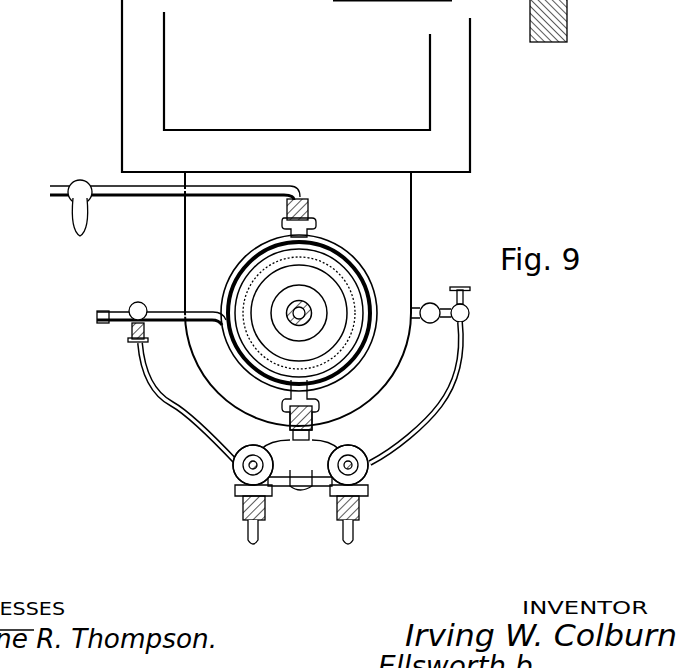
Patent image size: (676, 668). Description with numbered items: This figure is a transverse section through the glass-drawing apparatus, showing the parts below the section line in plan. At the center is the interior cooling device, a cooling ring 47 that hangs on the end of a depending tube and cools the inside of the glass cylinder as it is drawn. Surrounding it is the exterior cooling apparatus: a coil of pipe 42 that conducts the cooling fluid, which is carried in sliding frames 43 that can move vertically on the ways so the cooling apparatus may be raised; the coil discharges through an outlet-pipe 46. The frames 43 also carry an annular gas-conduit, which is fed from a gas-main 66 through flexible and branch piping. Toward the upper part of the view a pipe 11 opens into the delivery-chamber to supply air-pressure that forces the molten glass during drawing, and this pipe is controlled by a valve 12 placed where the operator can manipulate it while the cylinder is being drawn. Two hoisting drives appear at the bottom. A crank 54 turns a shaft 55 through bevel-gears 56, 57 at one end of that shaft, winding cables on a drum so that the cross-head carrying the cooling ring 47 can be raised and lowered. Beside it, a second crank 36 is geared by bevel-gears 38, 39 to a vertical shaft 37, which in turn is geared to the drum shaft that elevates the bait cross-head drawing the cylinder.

The pipe 11 is at (164, 198).
The valve 12 is at (66, 205).
The coil of pipe 42 is at (362, 246).
The sliding frames 43 is at (310, 225).
The outlet-pipe 46 is at (110, 314).
The cooling ring 47 is at (283, 295).
The gas-main 66 is at (163, 404).
The shaft 55 is at (252, 460).
The bevel-gear 57 is at (243, 468).
The bevel-gear 56 is at (240, 494).
The crank 54 is at (248, 538).
The vertical shaft 37 is at (352, 448).
The bevel-gear 39 is at (364, 468).
The bevel-gear 38 is at (369, 491).
The crank 36 is at (357, 531).